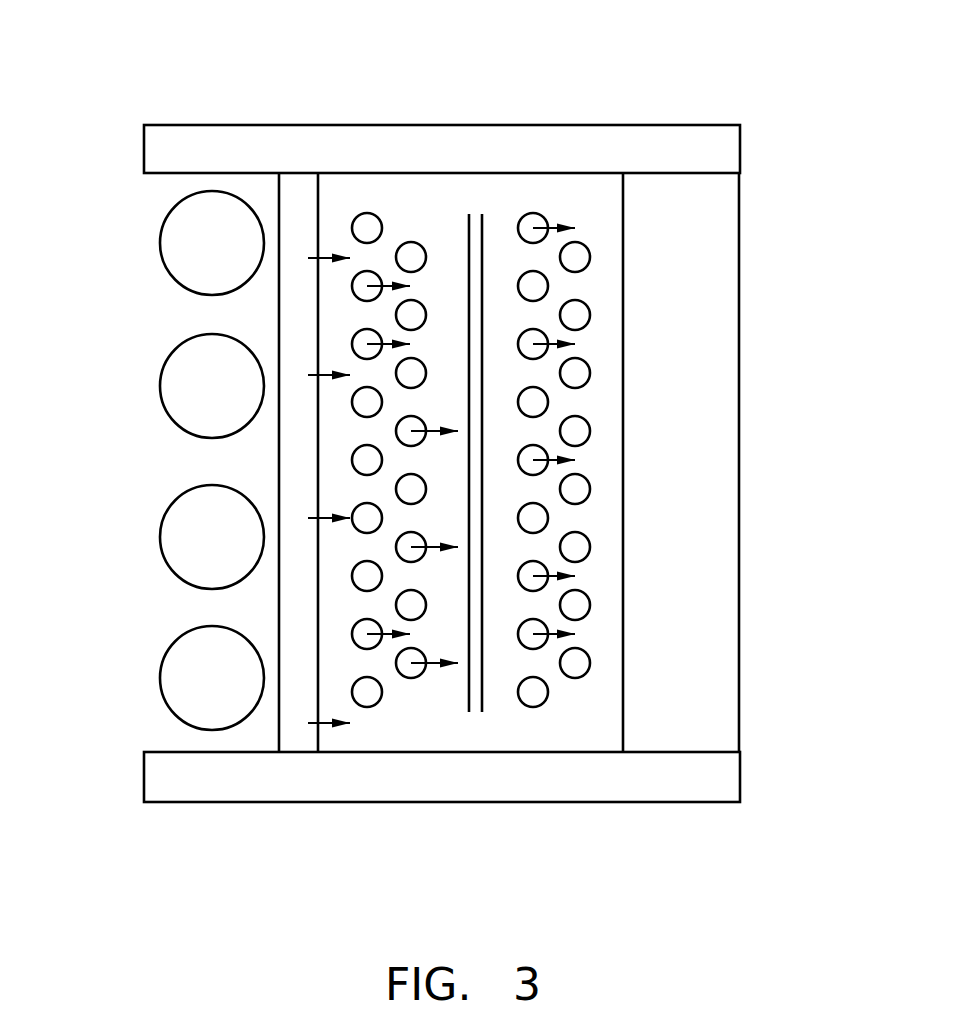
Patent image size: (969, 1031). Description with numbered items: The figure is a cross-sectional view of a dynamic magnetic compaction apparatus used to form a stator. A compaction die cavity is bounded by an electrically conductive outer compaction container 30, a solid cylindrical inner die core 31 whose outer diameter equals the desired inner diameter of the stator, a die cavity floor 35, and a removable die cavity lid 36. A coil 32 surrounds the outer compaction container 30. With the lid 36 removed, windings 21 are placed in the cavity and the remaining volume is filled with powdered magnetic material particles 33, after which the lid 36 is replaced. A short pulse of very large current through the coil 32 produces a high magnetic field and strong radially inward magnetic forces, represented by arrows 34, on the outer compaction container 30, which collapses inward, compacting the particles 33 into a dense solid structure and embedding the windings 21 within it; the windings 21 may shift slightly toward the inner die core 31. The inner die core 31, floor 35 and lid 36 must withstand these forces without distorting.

The windings 21 is at (482, 222).
The outer compaction container 30 is at (301, 200).
The inner die core 31 is at (707, 607).
The coil 32 is at (212, 390).
The powdered magnetic material particles 33 is at (413, 315).
The arrows 34 is at (306, 518).
The die cavity floor 35 is at (643, 777).
The removable die cavity lid 36 is at (670, 147).